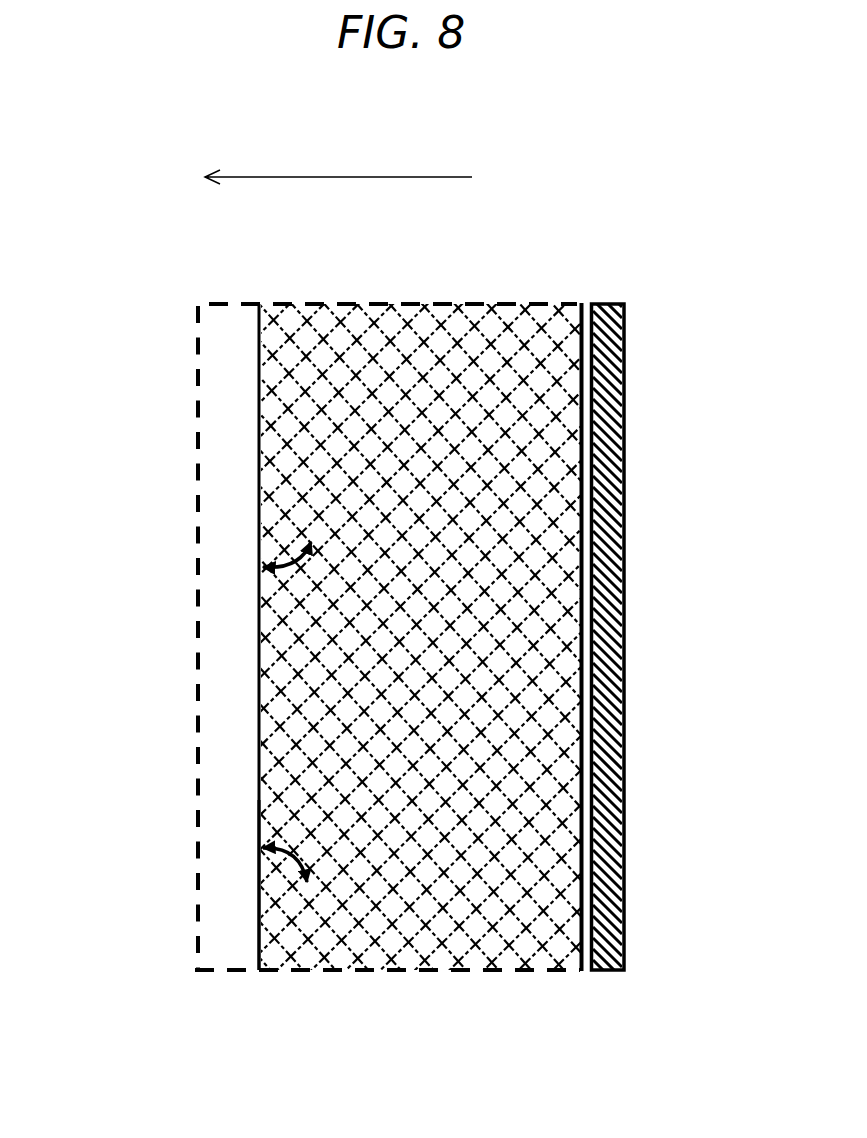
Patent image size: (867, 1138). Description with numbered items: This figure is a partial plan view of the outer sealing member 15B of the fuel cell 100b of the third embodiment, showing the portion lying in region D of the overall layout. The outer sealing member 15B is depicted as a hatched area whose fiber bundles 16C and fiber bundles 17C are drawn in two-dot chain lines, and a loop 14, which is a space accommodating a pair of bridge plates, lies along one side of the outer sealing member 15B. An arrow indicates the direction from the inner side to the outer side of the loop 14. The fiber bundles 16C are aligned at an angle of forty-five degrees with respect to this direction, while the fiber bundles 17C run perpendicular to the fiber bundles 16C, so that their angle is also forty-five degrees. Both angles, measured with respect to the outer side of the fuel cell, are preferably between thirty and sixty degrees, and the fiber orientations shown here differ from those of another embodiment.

The light emitting device 100b is at (163, 122).
The region D is at (118, 234).
The outer sealing member 15B is at (578, 287).
The fiber bundles 17C is at (285, 513).
The fiber bundles 16C is at (273, 912).
The loop 14 is at (587, 660).